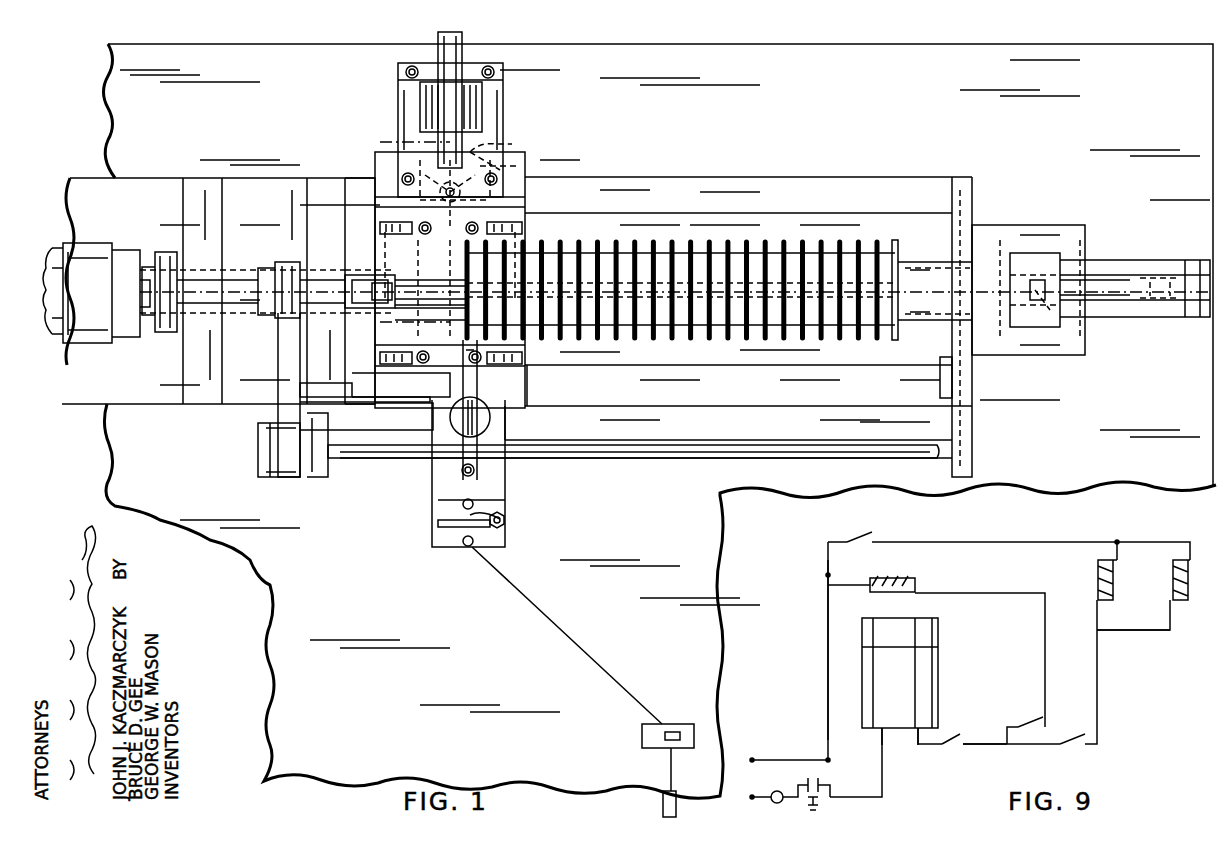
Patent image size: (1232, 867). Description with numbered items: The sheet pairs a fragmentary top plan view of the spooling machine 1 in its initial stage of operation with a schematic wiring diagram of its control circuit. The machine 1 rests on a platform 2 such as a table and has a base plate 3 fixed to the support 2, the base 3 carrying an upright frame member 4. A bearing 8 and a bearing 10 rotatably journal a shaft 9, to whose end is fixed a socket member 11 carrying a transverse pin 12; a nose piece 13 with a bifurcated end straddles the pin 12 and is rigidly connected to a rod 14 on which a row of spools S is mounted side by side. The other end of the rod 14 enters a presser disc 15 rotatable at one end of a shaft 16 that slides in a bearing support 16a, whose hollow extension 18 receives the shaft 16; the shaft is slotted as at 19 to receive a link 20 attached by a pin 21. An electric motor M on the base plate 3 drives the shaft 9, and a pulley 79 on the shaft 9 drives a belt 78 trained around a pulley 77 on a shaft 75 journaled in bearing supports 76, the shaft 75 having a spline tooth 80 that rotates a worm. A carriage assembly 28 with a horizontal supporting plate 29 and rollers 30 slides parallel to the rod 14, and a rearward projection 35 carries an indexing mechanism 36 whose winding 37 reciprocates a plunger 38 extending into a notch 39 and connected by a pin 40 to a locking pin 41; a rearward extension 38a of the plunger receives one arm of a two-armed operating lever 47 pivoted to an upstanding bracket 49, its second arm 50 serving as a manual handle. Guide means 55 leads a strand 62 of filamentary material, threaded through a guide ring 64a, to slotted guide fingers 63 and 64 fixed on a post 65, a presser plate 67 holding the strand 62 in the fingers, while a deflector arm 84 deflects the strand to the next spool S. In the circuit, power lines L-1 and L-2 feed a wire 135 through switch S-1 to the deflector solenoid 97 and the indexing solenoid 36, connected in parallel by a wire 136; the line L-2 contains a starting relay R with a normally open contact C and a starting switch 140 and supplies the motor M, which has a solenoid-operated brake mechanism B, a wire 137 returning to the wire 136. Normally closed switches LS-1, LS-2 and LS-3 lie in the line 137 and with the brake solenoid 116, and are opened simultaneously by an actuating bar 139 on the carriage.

In FIG. 1, the spooling machine 1 is at (872, 157).
In FIG. 1, the platform 2 is at (877, 62).
In FIG. 1, the base plate 3 is at (770, 187).
In FIG. 1, the upright frame member 4 is at (372, 146).
In FIG. 1, the bearing 8 is at (212, 272).
In FIG. 1, the shaft 9 is at (234, 300).
In FIG. 1, the bearing 10 is at (328, 272).
In FIG. 1, the socket member 11 is at (358, 278).
In FIG. 1, the pin 12 is at (398, 282).
In FIG. 1, the nose piece 13 is at (400, 320).
In FIG. 1, the rod 14 is at (606, 244).
In FIG. 1, the presser disc 15 is at (896, 244).
In FIG. 1, the shaft 16 is at (1000, 256).
In FIG. 1, the bearing support 16a is at (1030, 256).
In FIG. 1, the hollow extension 18 is at (1128, 280).
In FIG. 1, the slot 19 is at (1104, 278).
In FIG. 1, the link 20 is at (1150, 278).
In FIG. 1, the pin 21 is at (1045, 318).
In FIG. 1, the carriage assembly 28 is at (538, 424).
In FIG. 1, the horizontal supporting plate 29 is at (524, 236).
In FIG. 1, the rollers 30 is at (380, 228).
In FIG. 1, the rearwardly extending projection 35 is at (500, 128).
In FIG. 1, the indexing mechanism 36 is at (386, 128).
In FIG. 9, the indexing mechanism 36 is at (1189, 576).
In FIG. 1, the winding 37 is at (472, 93).
In FIG. 1, the plunger 38 is at (480, 192).
In FIG. 1, the rearward extension 38a is at (462, 38).
In FIG. 1, the notch 39 is at (512, 144).
In FIG. 1, the pin 40 is at (520, 166).
In FIG. 1, the locking pin 41 is at (396, 260).
In FIG. 1, the two-armed operating lever 47 is at (412, 104).
In FIG. 1, the upstanding bracket 49 is at (468, 72).
In FIG. 1, the second arm 50 is at (478, 110).
In FIG. 1, the guide means 55 is at (423, 505).
In FIG. 1, the strand 62 is at (584, 656).
In FIG. 1, the guide finger 63 is at (496, 546).
In FIG. 1, the guide finger 64 is at (472, 506).
In FIG. 1, the guide ring 64a is at (668, 730).
In FIG. 1, the post 65 is at (504, 524).
In FIG. 1, the presser plate 67 is at (490, 516).
In FIG. 1, the shaft 75 is at (558, 458).
In FIG. 1, the bearing support 76 is at (324, 474).
In FIG. 1, the pulley 77 is at (270, 476).
In FIG. 1, the belt 78 is at (280, 388).
In FIG. 1, the pulley 79 is at (263, 268).
In FIG. 1, the spline tooth 80 is at (700, 458).
In FIG. 1, the deflector arm 84 is at (462, 352).
In FIG. 9, the deflector mechanism solenoid 97 is at (1114, 576).
In FIG. 9, the brake solenoid 116 is at (888, 580).
In FIG. 9, the wire 135 is at (826, 622).
In FIG. 9, the wire 136 is at (1118, 634).
In FIG. 9, the wire 137 is at (972, 746).
In FIG. 1, the actuating bar 139 is at (539, 392).
In FIG. 9, the starting switch 140 is at (818, 810).
In FIG. 1, the electric motor M is at (106, 272).
In FIG. 9, the electric motor M is at (930, 674).
In FIG. 1, the spools S is at (682, 230).
In FIG. 9, the brake mechanism B is at (938, 626).
In FIG. 9, the normally open contact C is at (818, 782).
In FIG. 9, the starting relay R is at (774, 802).
In FIG. 9, the power line L-1 is at (758, 760).
In FIG. 9, the power line L-2 is at (754, 798).
In FIG. 9, the switch S-1 is at (850, 528).
In FIG. 9, the normally closed switch LS-1 is at (956, 732).
In FIG. 9, the normally closed switch LS-2 is at (1034, 710).
In FIG. 9, the normally closed switch LS-3 is at (1074, 724).